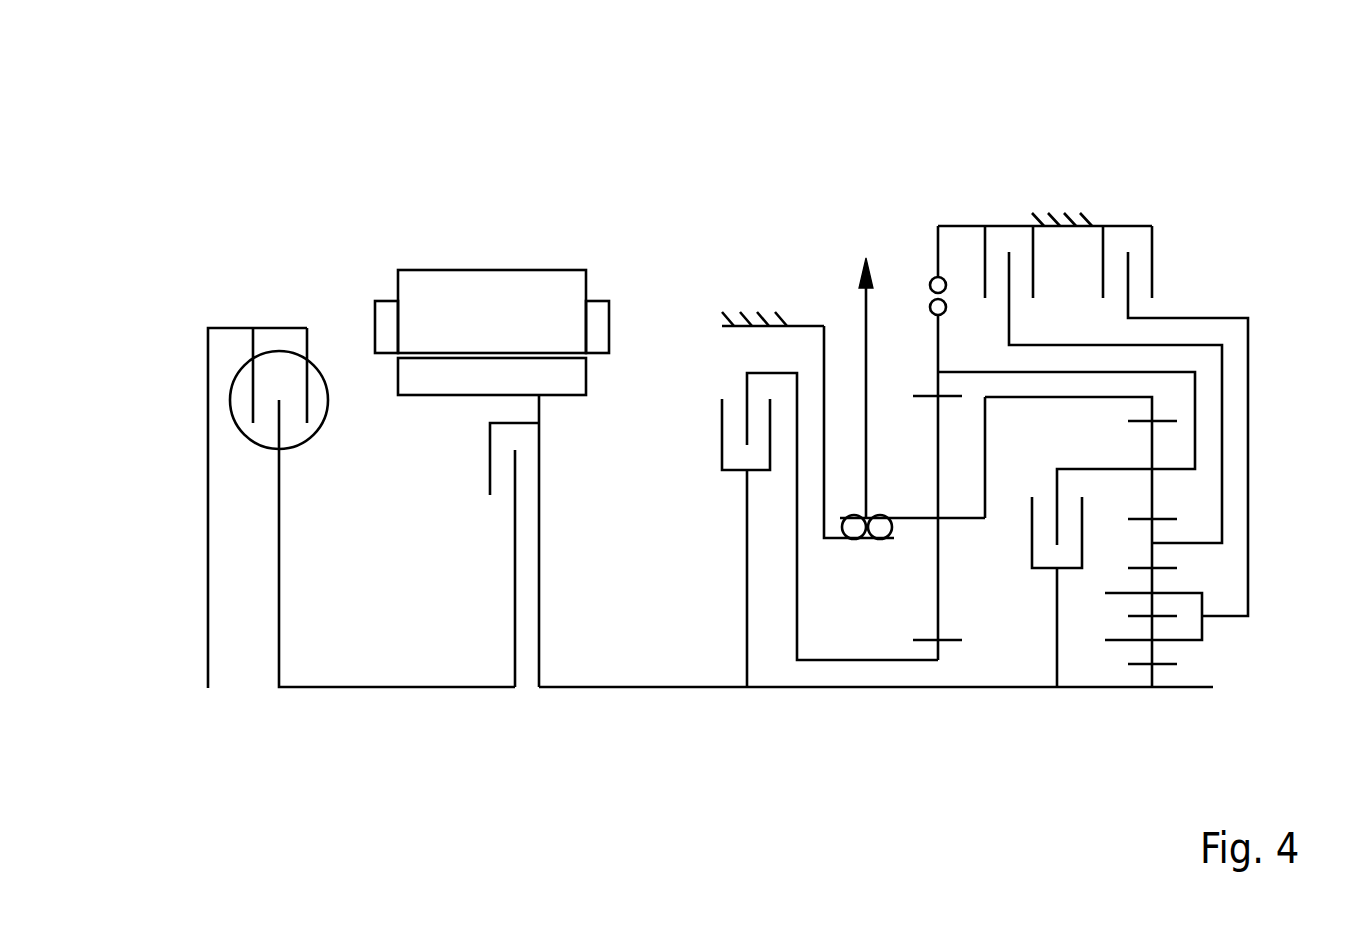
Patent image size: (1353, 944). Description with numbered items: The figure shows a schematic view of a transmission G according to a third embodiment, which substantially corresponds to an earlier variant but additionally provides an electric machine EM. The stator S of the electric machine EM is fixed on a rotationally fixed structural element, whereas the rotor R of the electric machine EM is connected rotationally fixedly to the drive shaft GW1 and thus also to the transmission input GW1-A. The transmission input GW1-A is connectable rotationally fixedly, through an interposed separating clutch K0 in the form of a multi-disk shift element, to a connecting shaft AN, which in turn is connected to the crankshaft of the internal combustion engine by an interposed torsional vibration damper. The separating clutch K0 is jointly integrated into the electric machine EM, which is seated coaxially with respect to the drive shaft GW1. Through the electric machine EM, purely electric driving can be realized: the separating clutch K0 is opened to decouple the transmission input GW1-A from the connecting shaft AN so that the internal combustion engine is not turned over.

The transmission G is at (266, 190).
The electric machine EM is at (494, 221).
The stator S is at (502, 313).
The rotor R is at (497, 378).
The connecting shaft AN is at (323, 690).
The separating clutch K0 is at (502, 505).
The transmission input GW1-A is at (538, 694).
The drive shaft GW1 is at (626, 690).